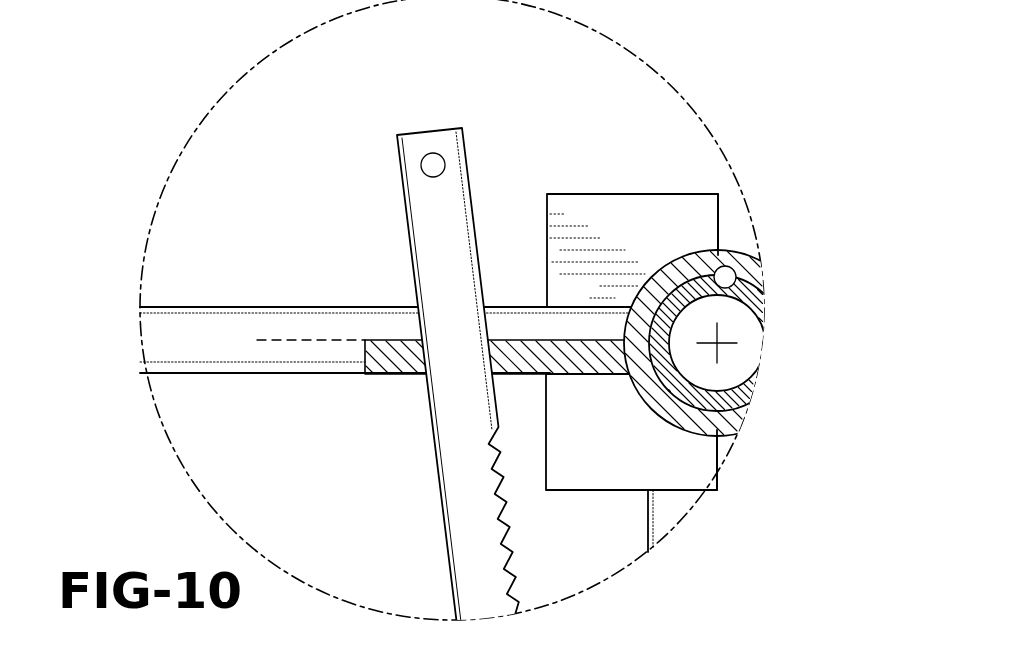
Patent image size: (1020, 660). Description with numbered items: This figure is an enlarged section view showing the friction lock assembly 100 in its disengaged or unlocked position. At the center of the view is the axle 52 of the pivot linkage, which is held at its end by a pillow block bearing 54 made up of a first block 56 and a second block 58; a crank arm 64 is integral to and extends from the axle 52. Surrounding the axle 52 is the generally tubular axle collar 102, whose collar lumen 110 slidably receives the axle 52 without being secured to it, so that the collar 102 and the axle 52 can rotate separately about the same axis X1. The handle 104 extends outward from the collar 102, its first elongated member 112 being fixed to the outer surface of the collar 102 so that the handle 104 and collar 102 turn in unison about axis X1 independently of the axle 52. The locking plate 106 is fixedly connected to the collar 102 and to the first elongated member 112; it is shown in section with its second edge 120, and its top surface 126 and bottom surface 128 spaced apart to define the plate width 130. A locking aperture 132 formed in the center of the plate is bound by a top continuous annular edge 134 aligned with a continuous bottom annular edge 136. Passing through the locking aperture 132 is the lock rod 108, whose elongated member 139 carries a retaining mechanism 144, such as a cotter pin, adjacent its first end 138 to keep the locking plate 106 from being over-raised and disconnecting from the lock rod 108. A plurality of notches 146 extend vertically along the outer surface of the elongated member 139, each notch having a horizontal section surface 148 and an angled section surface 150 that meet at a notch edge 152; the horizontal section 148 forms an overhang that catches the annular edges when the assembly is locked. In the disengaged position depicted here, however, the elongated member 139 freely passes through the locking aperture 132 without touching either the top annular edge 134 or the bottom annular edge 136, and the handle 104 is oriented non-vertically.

The axle 52 is at (678, 386).
The pillow block bearing 54 is at (585, 192).
The first block 56 is at (742, 222).
The second block 58 is at (619, 192).
The crank arm 64 is at (672, 512).
The friction lock assembly 100 is at (378, 250).
The axle collar 102 is at (680, 270).
The handle 104 is at (222, 378).
The locking plate 106 is at (586, 338).
The lock rod 108 is at (430, 492).
The collar lumen 110 is at (728, 270).
The first elongated member 112 is at (184, 326).
The second edge 120 is at (308, 375).
The top surface 126 is at (393, 338).
The bottom surface 128 is at (393, 376).
The plate width 130 is at (268, 412).
The locking aperture 132 is at (503, 382).
The top continuous annular edge 134 is at (512, 305).
The continuous bottom annular edge 136 is at (418, 376).
The first end 138 is at (409, 355).
The elongated member 139 is at (430, 492).
The retaining mechanism 144 is at (428, 170).
The notches 146 is at (510, 488).
The horizontal section surface 148 is at (497, 454).
The angled section surface 150 is at (499, 508).
The notch edge 152 is at (497, 483).
The axis X1 is at (725, 340).